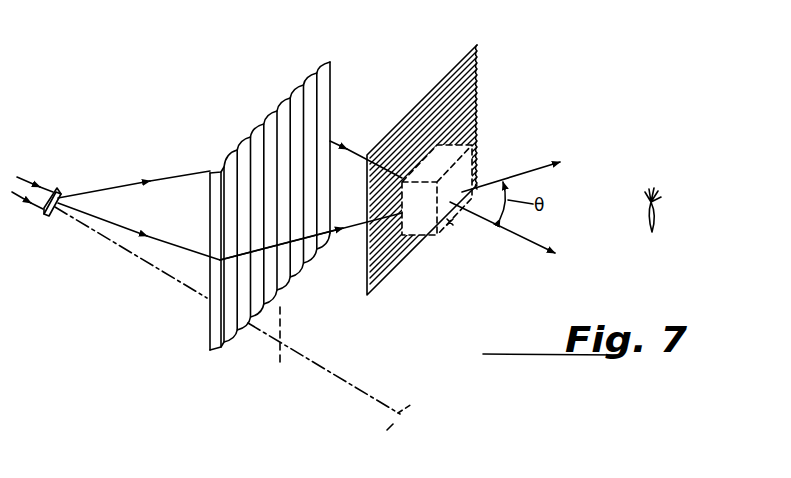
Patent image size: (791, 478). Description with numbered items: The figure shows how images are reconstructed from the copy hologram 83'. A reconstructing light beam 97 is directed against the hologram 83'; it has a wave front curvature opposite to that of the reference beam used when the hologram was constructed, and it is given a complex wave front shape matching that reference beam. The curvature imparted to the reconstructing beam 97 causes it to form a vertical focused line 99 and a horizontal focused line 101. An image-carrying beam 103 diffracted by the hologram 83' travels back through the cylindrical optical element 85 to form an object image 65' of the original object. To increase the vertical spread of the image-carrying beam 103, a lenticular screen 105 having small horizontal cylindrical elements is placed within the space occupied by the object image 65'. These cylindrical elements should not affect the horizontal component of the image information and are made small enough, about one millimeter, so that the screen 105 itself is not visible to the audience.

The reconstructing light beam 97 is at (22, 180).
The copy hologram 83' is at (79, 182).
The image-carrying beam 103 is at (178, 182).
The cylindrical optical element 85 is at (268, 100).
The vertical focused line 99 is at (283, 322).
The horizontal focused line 101 is at (420, 392).
The lenticular screen 105 is at (477, 65).
The object image 65' is at (481, 210).